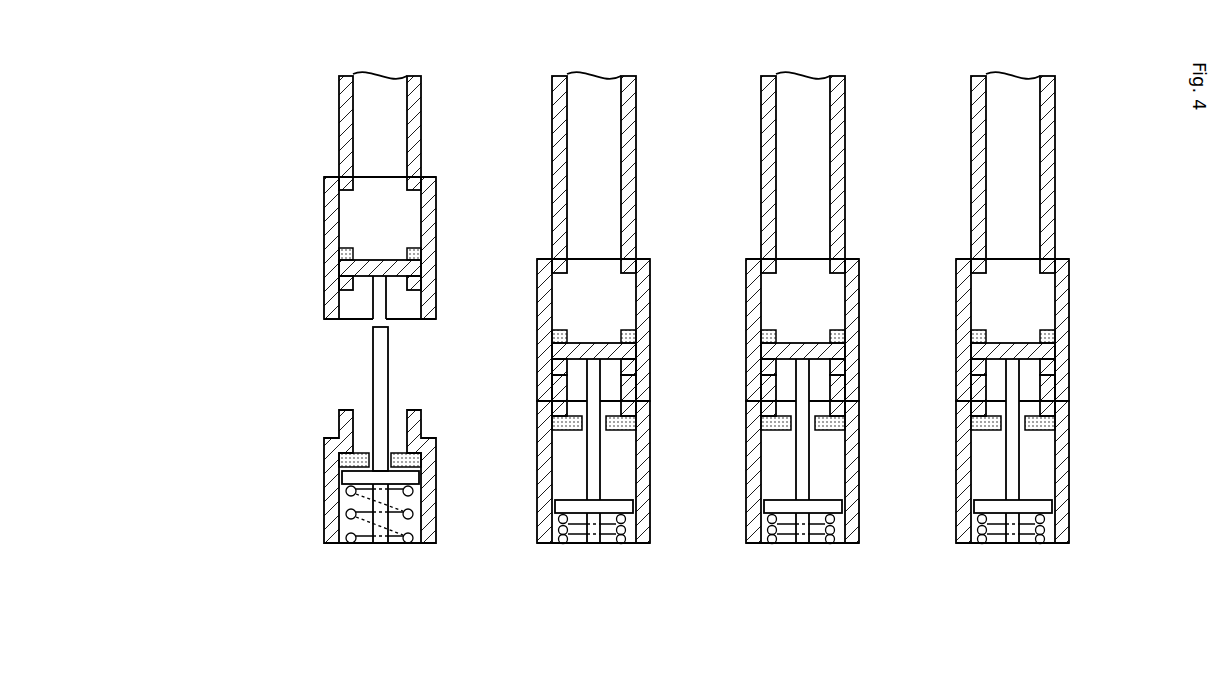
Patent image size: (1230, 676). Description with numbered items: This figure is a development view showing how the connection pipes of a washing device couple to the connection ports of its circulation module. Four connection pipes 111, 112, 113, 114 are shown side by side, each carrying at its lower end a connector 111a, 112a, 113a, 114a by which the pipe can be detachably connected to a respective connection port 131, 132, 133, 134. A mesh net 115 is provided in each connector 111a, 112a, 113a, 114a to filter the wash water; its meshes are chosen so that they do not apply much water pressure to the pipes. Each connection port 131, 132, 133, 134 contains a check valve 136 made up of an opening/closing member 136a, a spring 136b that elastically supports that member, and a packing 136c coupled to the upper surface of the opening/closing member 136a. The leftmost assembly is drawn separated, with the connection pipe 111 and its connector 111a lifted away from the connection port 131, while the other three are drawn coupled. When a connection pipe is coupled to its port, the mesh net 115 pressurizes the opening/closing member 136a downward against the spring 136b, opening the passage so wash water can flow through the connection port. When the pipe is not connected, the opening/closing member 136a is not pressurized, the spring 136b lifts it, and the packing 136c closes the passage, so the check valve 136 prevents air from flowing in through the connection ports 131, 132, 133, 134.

The connection pipe 111 is at (414, 113).
The connector 111a is at (429, 237).
The connection pipe 112 is at (627, 113).
The connector 112a is at (642, 290).
The connection pipe 113 is at (842, 172).
The connector 113a is at (847, 330).
The connection pipe 114 is at (1052, 172).
The connector 114a is at (1057, 330).
The mesh net 115 is at (417, 268).
The connection port 131 is at (428, 477).
The connection port 132 is at (642, 480).
The connection port 133 is at (842, 459).
The connection port 134 is at (1052, 459).
The check valve 136 is at (298, 496).
The opening/closing member 136a is at (342, 478).
The spring 136b is at (345, 462).
The packing 136c is at (352, 514).